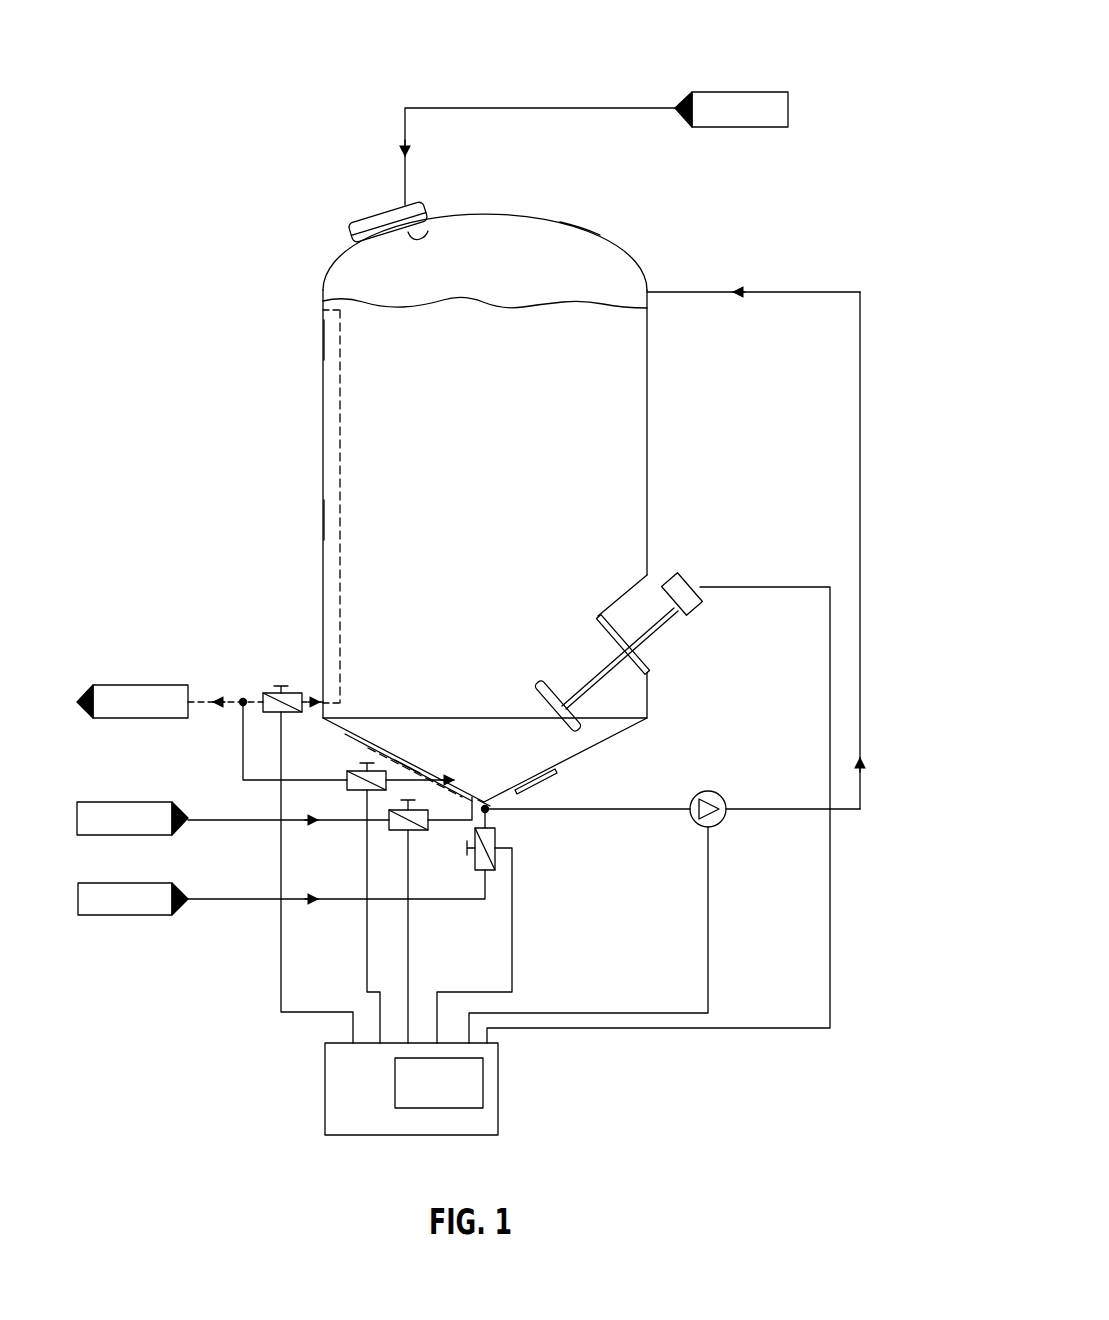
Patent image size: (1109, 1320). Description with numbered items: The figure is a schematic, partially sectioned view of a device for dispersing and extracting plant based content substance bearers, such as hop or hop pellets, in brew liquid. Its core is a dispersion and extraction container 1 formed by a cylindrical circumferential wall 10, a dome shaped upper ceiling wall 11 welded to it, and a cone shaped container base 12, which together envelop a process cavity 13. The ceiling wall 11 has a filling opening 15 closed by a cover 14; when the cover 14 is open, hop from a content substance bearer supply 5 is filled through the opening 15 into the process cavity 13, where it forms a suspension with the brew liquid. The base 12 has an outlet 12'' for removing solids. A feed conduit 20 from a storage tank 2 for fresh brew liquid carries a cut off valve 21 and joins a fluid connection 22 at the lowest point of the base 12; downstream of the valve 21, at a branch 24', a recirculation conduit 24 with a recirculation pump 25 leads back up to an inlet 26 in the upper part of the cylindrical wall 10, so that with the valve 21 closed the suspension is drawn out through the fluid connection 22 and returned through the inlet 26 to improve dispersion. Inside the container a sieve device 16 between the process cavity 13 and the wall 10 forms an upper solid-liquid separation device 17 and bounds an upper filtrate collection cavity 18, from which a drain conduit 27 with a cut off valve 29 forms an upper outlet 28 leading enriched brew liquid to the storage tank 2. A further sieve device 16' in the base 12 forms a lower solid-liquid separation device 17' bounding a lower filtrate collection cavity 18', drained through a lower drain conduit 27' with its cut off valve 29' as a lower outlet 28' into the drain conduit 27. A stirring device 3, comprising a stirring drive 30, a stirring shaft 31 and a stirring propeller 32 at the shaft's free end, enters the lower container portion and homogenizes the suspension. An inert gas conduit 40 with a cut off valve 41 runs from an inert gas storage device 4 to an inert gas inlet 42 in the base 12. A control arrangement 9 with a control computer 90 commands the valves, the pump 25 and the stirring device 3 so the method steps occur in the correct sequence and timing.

The dispersion and extraction container 1 is at (272, 281).
The storage tank 2 is at (100, 677).
The stirring device 3 is at (688, 571).
The inert gas storage device 4 is at (95, 797).
The content substance bearer supply 5 is at (740, 88).
The control arrangement 9 is at (503, 1065).
The cylindrical circumferential wall 10 is at (648, 392).
The dome shaped upper ceiling wall 11 is at (598, 236).
The cone shaped container base 12 is at (509, 760).
The outlet 12'' is at (595, 774).
The process cavity 13 is at (506, 454).
The cover 14 is at (363, 222).
The filling opening 15 is at (416, 232).
The sieve device 16 is at (278, 506).
The sieve device 16' is at (434, 734).
The upper solid-liquid separation device 17 is at (270, 338).
The lower solid-liquid separation device 17' is at (408, 709).
The upper filtrate collection cavity 18 is at (273, 520).
The lower filtrate collection cavity 18' is at (430, 708).
The feed conduit 20 is at (320, 905).
The cut off valve 21 is at (494, 858).
The fluid connection 22 is at (490, 802).
The recirculation conduit 24 is at (894, 550).
The branch 24' is at (586, 838).
The recirculation pump 25 is at (723, 819).
The inlet 26 is at (656, 291).
The drain conduit 27 is at (249, 653).
The lower drain conduit 27' is at (247, 746).
The upper outlet 28 is at (301, 649).
The lower outlet 28' is at (381, 753).
The cut off valve 29 is at (265, 864).
The cut off valve 29' is at (305, 903).
The stirring drive 30 is at (700, 603).
The stirring shaft 31 is at (640, 636).
The stirring propeller 32 is at (547, 688).
The inert gas conduit 40 is at (262, 821).
The cut off valve 41 is at (400, 834).
The inert gas inlet 42 is at (455, 805).
The control computer 90 is at (478, 1098).